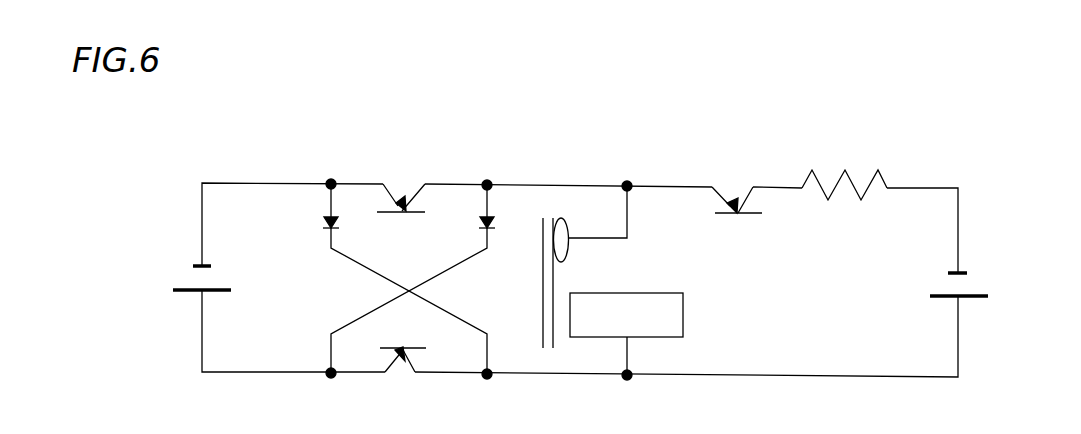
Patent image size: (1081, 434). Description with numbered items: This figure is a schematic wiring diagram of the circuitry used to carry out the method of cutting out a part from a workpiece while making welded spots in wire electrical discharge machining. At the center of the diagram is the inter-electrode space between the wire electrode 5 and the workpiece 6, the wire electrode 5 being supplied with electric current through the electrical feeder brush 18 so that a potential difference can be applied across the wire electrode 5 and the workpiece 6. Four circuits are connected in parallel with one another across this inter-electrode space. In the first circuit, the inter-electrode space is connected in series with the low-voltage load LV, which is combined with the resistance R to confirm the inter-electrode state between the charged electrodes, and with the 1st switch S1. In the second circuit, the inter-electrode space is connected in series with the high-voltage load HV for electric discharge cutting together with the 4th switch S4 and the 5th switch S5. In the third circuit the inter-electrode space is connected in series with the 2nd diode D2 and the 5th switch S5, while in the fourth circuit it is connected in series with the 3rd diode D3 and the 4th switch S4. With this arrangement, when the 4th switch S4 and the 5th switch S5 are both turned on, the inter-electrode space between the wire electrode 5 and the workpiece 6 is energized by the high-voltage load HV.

The wire electrode 5 is at (551, 266).
The electrical feeder brush 18 is at (562, 229).
The workpiece 6 is at (683, 334).
The high-voltage load HV is at (174, 275).
The low-voltage load LV is at (979, 279).
The resistance R is at (844, 173).
The 1st switch S1 is at (737, 220).
The 4th switch S4 is at (401, 213).
The 5th switch S5 is at (403, 344).
The 2nd diode D2 is at (413, 279).
The 3rd diode D3 is at (391, 279).